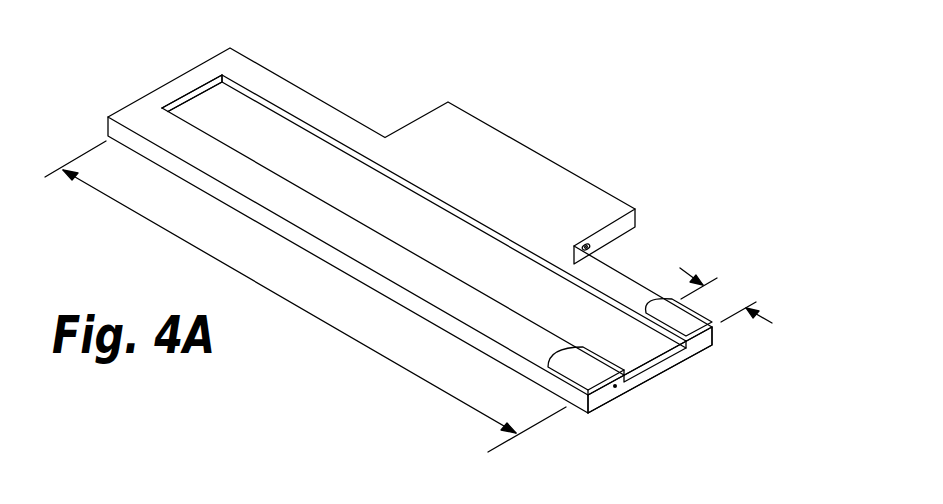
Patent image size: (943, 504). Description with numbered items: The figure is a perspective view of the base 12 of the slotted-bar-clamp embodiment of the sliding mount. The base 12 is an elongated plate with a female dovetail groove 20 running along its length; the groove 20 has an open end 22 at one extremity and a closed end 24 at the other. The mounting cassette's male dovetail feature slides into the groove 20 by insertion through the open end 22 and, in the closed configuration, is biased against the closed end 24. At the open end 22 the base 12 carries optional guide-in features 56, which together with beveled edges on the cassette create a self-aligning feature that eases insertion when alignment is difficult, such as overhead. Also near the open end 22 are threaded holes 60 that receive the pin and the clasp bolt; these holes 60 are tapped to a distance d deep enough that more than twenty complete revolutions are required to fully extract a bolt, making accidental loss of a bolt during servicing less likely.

The base 12 is at (693, 118).
The female dovetail groove 20 is at (320, 128).
The open end 22 is at (667, 382).
The closed end 24 is at (193, 92).
The guide-in features 56 is at (677, 342).
The threaded holes 60 is at (714, 338).